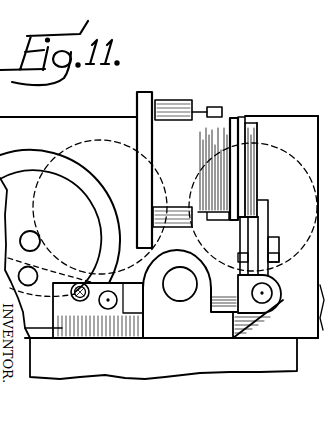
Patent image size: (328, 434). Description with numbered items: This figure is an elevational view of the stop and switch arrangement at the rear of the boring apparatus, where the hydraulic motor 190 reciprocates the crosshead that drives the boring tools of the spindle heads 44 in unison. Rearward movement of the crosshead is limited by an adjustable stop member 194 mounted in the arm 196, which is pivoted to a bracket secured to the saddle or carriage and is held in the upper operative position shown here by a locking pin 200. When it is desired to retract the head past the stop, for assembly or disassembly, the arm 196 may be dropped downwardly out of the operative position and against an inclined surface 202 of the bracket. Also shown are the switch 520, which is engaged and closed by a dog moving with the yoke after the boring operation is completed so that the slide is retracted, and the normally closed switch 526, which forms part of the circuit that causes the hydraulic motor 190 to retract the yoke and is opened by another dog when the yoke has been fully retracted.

The hydraulic motor 190 is at (33, 153).
The spindle head 44 is at (106, 136).
The normally closed switch 526 is at (194, 127).
The switch 520 is at (238, 120).
The adjustable stop member 194 is at (40, 221).
The arm 196 is at (33, 269).
The locking pin 200 is at (58, 337).
The inclined surface 202 is at (79, 301).